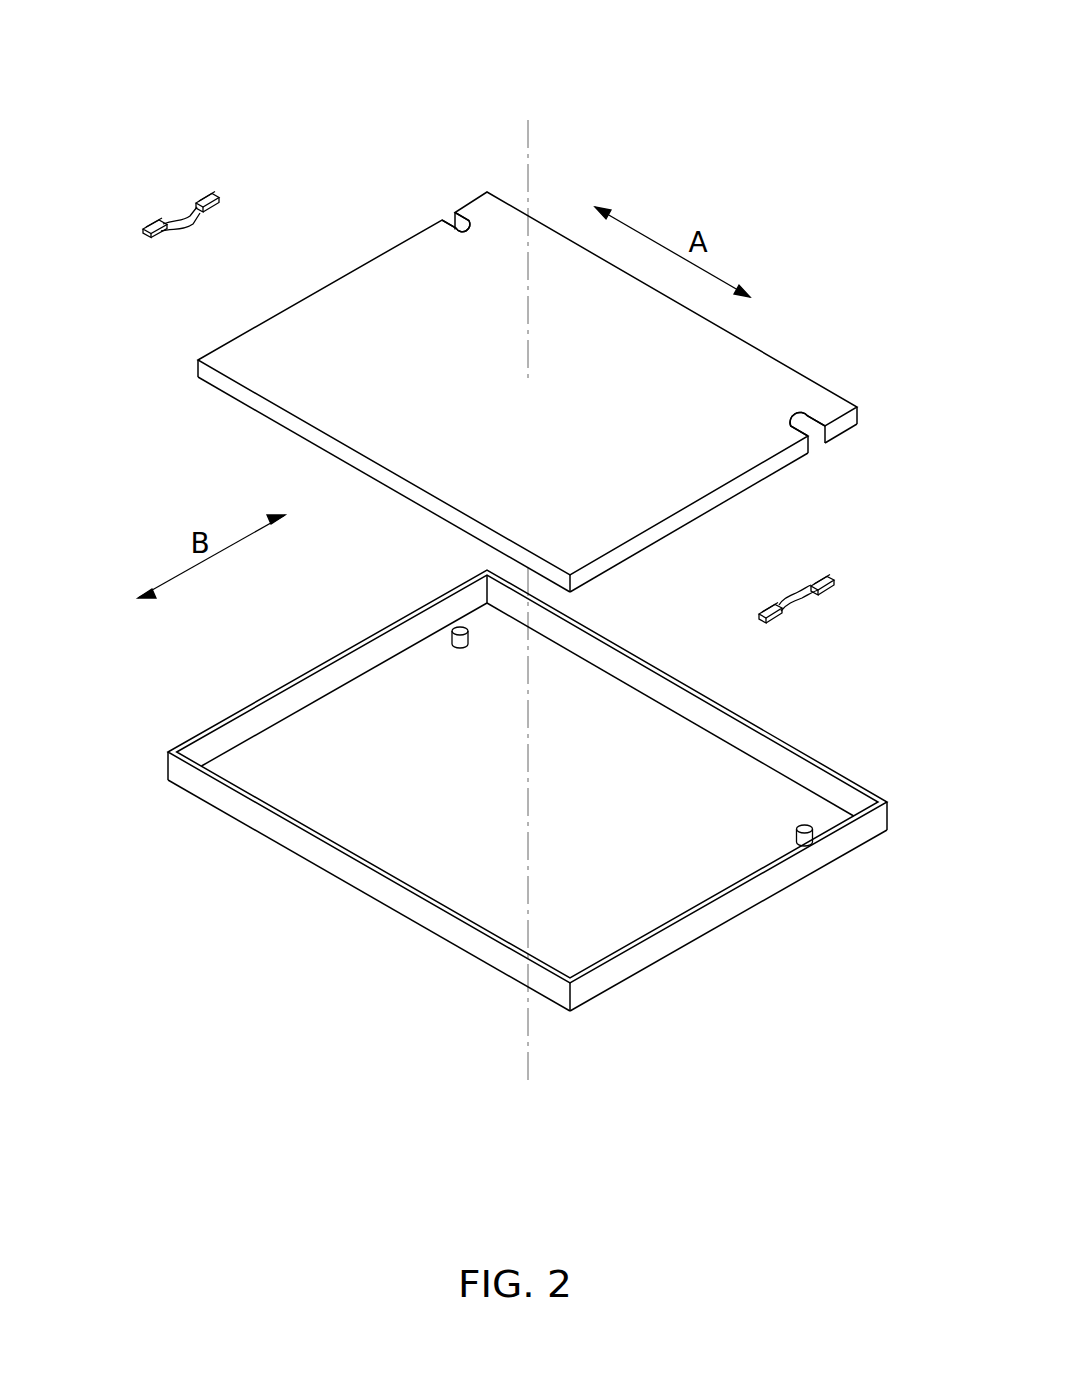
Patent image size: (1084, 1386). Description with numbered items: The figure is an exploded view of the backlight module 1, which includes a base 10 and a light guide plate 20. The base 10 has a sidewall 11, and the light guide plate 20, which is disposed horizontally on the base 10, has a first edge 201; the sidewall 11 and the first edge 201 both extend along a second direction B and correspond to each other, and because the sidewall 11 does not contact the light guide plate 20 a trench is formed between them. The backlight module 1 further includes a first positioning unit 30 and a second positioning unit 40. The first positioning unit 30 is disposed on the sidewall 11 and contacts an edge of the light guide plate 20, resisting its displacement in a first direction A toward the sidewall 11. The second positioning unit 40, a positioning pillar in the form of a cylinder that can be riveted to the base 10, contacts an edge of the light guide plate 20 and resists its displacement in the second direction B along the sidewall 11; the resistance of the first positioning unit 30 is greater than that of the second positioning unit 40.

The backlight module 1 is at (259, 36).
The base 10 is at (527, 789).
The sidewall 11 is at (283, 690).
The light guide plate 20 is at (760, 350).
The first edge 201 is at (332, 283).
The first positioning unit 30 is at (154, 191).
The second positioning unit 40 is at (813, 835).